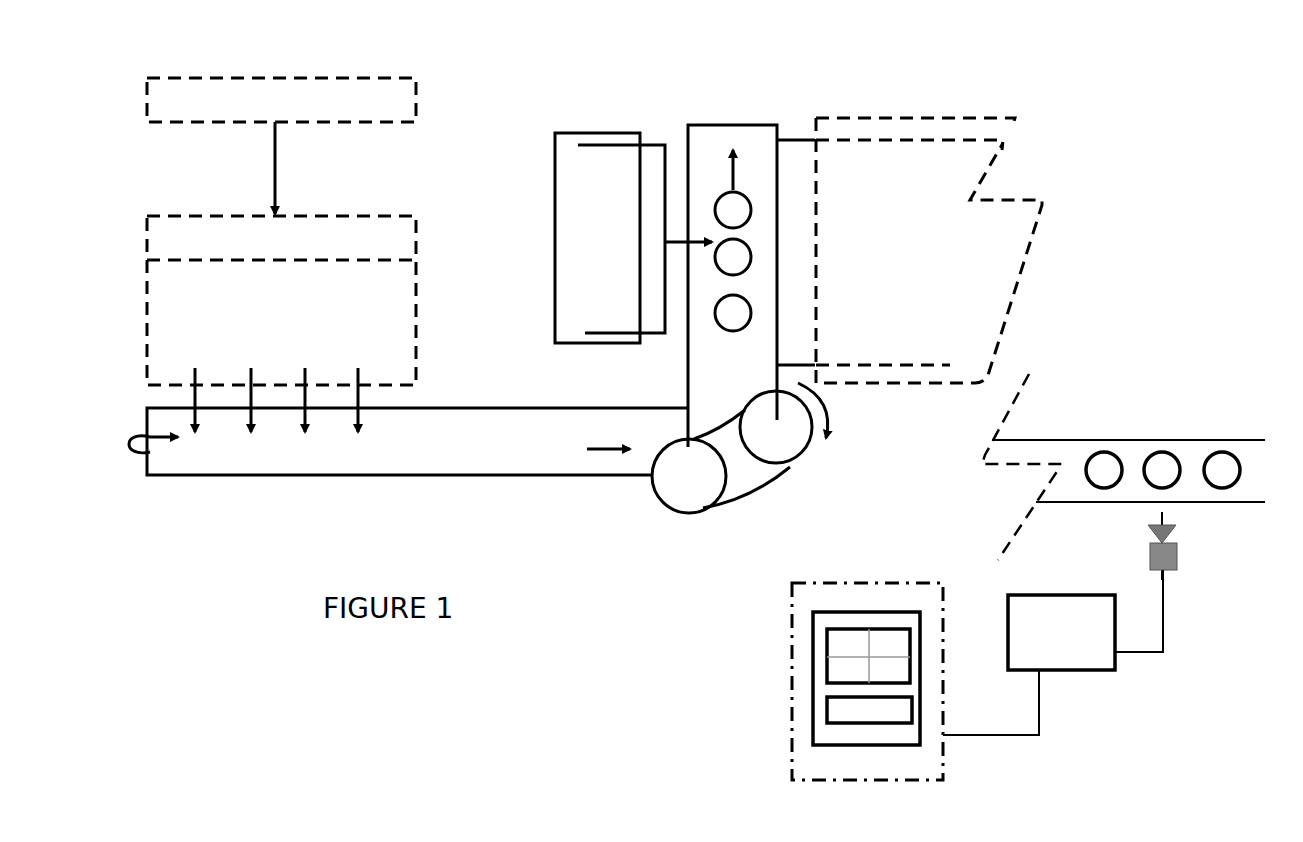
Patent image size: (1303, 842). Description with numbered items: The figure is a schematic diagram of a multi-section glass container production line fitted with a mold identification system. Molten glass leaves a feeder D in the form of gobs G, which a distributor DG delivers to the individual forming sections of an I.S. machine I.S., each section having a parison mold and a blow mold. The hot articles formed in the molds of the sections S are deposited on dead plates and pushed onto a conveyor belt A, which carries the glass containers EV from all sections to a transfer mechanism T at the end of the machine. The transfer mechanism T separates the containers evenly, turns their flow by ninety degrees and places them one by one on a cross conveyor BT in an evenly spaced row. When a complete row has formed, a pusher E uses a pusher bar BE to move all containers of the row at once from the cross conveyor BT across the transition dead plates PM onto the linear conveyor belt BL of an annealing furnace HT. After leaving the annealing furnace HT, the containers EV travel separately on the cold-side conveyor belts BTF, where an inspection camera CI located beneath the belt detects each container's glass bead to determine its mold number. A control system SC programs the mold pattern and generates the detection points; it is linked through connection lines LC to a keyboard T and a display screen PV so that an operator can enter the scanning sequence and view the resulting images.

The feeder D is at (281, 100).
The gobs G is at (290, 168).
The distributor DG is at (281, 240).
The I.S. machine I.S. is at (281, 300).
The sections S is at (276, 387).
The conveyor belt A is at (408, 441).
The pusher E is at (566, 133).
The pusher bar BE is at (661, 145).
The cross conveyor BT is at (708, 145).
The transition dead plates PM is at (790, 157).
The linear conveyor belt BL is at (908, 133).
The annealing furnace HT is at (980, 115).
The glass containers EV is at (715, 312).
The transfer mechanism T is at (790, 472).
The conveyor belts (cold side) BTF is at (1133, 440).
The inspection camera CI is at (1182, 558).
The control system SC is at (1053, 652).
The connection lines LC is at (1163, 617).
The display screen PV is at (848, 638).